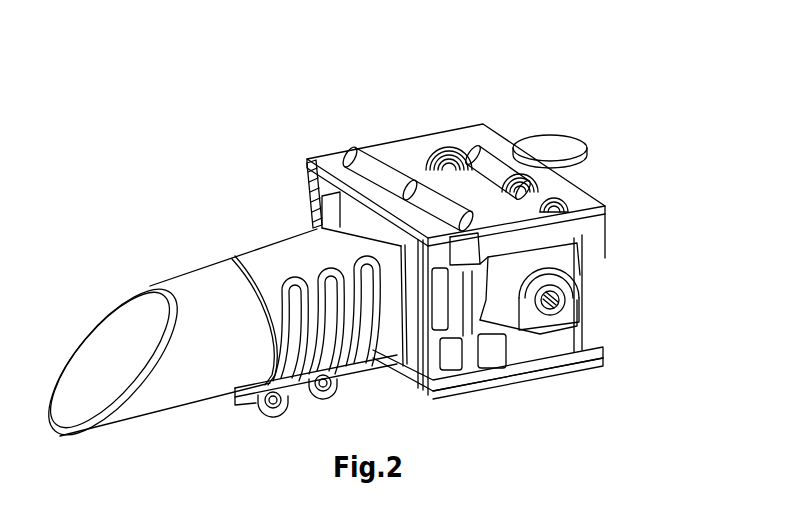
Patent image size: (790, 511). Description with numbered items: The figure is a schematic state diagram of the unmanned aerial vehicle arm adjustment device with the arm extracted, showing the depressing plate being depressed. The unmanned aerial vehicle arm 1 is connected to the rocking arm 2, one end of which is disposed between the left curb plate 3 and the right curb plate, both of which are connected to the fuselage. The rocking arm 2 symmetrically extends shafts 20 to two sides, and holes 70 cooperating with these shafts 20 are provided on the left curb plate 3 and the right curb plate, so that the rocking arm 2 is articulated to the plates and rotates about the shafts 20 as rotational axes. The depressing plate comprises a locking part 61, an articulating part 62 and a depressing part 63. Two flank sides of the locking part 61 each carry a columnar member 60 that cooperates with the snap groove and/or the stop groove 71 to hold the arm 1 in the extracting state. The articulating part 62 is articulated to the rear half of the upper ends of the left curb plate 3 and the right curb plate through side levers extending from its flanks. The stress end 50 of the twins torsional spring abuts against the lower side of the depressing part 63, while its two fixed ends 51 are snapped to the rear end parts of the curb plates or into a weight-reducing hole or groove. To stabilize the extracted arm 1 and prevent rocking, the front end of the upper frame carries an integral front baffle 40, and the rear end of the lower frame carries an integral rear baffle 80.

The unmanned aerial vehicle arm 1 is at (187, 270).
The rocking arm 2 is at (263, 240).
The left curb plate 3 is at (307, 205).
The front baffle 40 is at (350, 185).
The shafts 20 is at (585, 265).
The columnar member 60 is at (368, 157).
The locking part 61 is at (413, 183).
The articulating part 62 is at (493, 167).
The depressing part 63 is at (557, 147).
The stress end 50 is at (593, 163).
The stop groove 71 is at (465, 262).
The fixed ends 51 is at (557, 297).
The holes 70 is at (562, 318).
The rear baffle 80 is at (590, 352).